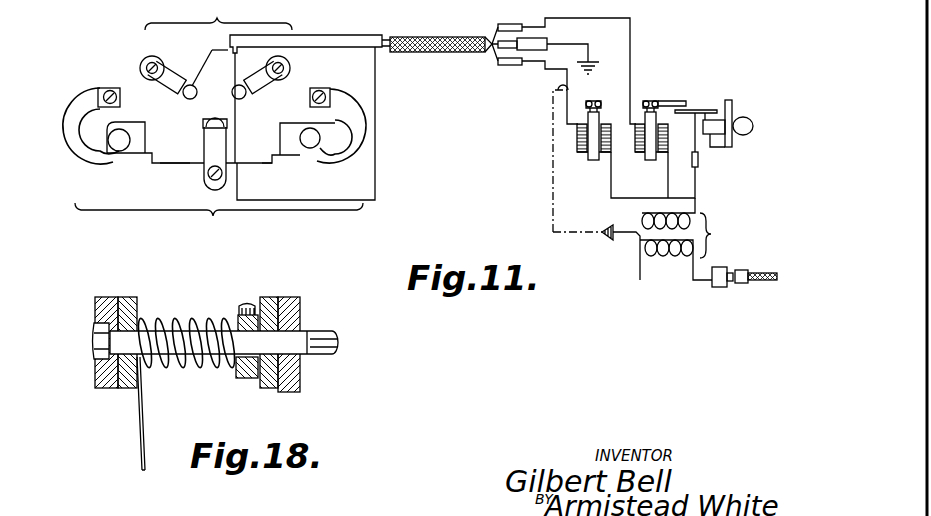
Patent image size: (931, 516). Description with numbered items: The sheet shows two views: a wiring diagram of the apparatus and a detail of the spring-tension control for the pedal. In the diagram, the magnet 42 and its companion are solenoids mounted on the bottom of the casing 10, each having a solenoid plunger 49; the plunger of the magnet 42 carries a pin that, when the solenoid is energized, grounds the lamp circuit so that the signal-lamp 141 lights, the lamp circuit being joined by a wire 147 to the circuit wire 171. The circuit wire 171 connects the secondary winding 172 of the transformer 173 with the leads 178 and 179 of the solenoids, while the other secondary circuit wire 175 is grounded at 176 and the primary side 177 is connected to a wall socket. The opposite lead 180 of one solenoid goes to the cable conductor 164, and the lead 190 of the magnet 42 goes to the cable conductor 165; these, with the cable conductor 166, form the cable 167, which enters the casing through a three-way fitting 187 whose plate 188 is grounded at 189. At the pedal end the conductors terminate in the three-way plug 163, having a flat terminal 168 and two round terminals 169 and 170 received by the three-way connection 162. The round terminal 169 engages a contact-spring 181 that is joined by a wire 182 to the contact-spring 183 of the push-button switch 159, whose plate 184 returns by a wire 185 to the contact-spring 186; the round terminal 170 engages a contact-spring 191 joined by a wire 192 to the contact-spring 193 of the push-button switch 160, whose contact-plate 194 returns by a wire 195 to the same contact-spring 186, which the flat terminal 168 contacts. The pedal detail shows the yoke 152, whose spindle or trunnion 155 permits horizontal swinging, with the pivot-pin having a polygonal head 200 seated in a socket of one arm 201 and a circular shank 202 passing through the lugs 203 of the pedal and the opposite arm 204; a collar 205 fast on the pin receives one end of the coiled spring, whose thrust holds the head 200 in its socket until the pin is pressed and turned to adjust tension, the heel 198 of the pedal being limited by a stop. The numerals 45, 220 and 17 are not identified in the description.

In FIG. 11, the three-way plug 163 is at (218, 15).
In FIG. 11, the three-way connection 162 is at (219, 195).
In FIG. 11, the cable conductor 166 is at (306, 126).
In FIG. 11, the cable conductor 165 is at (301, 99).
In FIG. 11, the cable conductor 164 is at (198, 60).
In FIG. 11, the plate of push-button switch 184 is at (137, 122).
In FIG. 11, the contact-spring of push-button 183 is at (62, 141).
In FIG. 11, the wire 185 is at (176, 163).
In FIG. 11, the push-button switch 159 is at (113, 163).
In FIG. 11, the wire 182 is at (140, 72).
In FIG. 11, the contact-spring of three-way connector 181 is at (171, 73).
In FIG. 11, the round terminal 169 is at (187, 103).
In FIG. 11, the contact-spring of three-way connection 186 is at (203, 140).
In FIG. 11, the flat terminal 168 is at (222, 120).
In FIG. 11, the contact-plate of push-button switch 194 is at (281, 142).
In FIG. 11, the contact-spring of push-button switch 193 is at (350, 100).
In FIG. 11, the wire 195 is at (271, 165).
In FIG. 11, the push-button switch 160 is at (323, 162).
In FIG. 11, the wire 192 is at (291, 82).
In FIG. 11, the contact-spring of three-way connection 191 is at (275, 88).
In FIG. 11, the round terminal 170 is at (254, 101).
In FIG. 11, the cable 167 is at (420, 52).
In FIG. 11, the three-way fitting 187 is at (512, 24).
In FIG. 11, the plate of fitting 188 is at (547, 42).
In FIG. 11, the ground 189 is at (587, 59).
In FIG. 11, the lead of solenoid 190 is at (632, 65).
In FIG. 11, the lead of solenoid 180 is at (553, 106).
In FIG. 11, the casing 10 is at (553, 153).
In FIG. 11, the solenoid coil 45 is at (574, 156).
In FIG. 11, the magnet 42 is at (638, 158).
In FIG. 11, the solenoid plunger 49 is at (594, 161).
In FIG. 11, the lead of solenoid 179 is at (612, 182).
In FIG. 11, the lead of solenoid 178 is at (668, 160).
In FIG. 11, the wire 147 is at (700, 178).
In FIG. 11, the circuit wire 171 is at (694, 175).
In FIG. 11, the switch arm 220 is at (676, 94).
In FIG. 11, the heel of pedal 198 is at (727, 100).
In FIG. 11, the signal-lamp 141 is at (753, 122).
In FIG. 11, the secondary winding 172 is at (655, 214).
In FIG. 11, the primary side of transformer 177 is at (676, 260).
In FIG. 11, the secondary circuit wire 175 is at (708, 236).
In FIG. 11, the ground 176 is at (606, 228).
In FIG. 11, the transformer 173 is at (638, 234).
In FIG. 11, the plug 17 is at (737, 288).
In FIG. 18, the arm of yoke 201 is at (102, 298).
In FIG. 18, the arm of yoke 204 is at (296, 298).
In FIG. 18, the collar 205 is at (137, 300).
In FIG. 18, the shank of pin 202 is at (224, 343).
In FIG. 18, the spindle or trunnion 155 is at (340, 343).
In FIG. 18, the lugs 203 is at (195, 311).
In FIG. 18, the polygonal head 200 is at (93, 340).
In FIG. 18, the yoke 152 is at (95, 388).